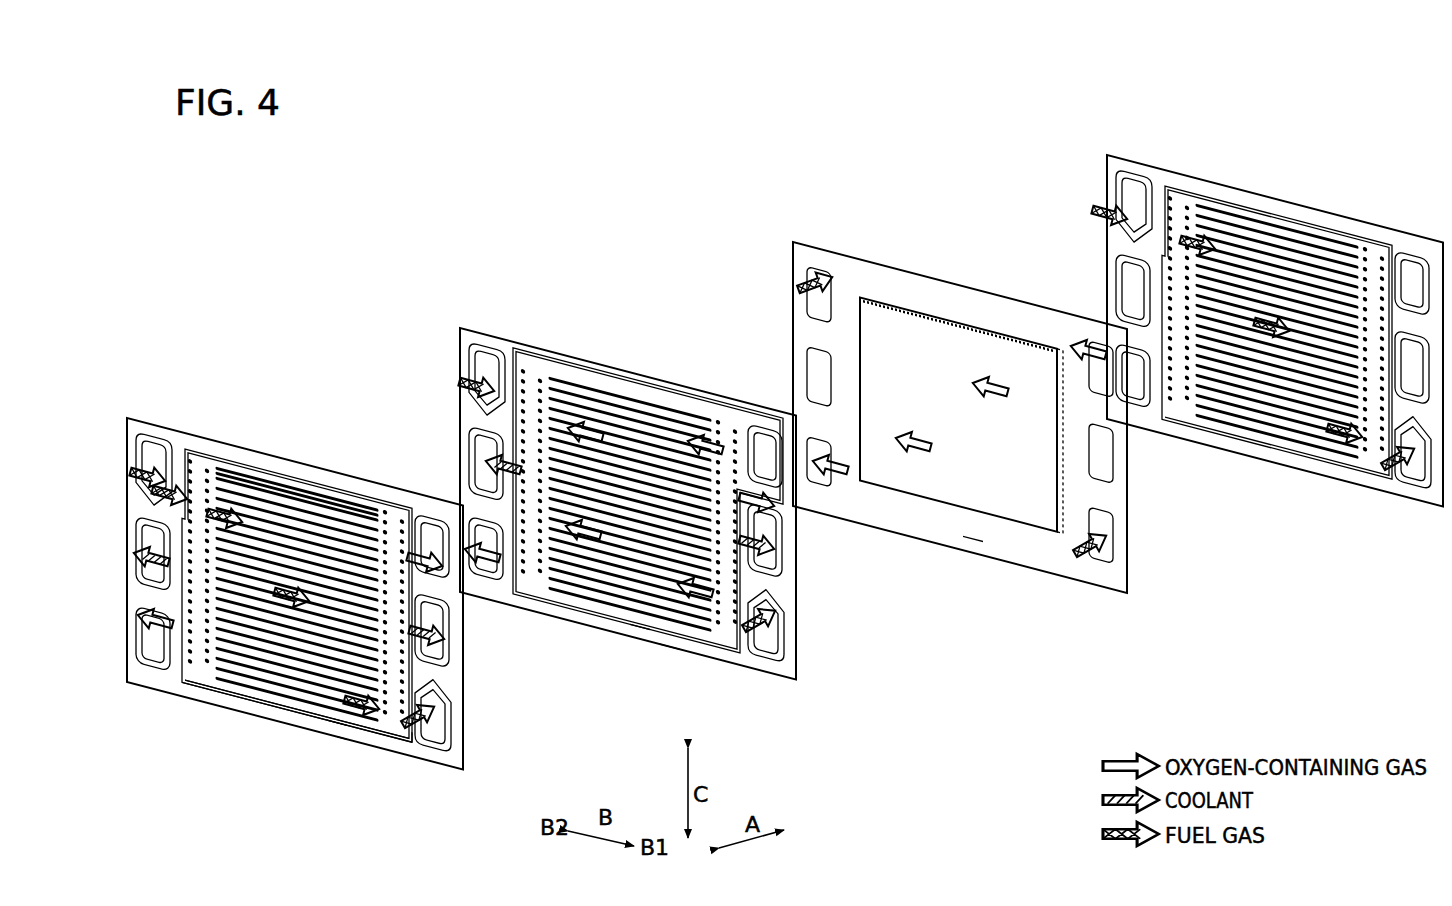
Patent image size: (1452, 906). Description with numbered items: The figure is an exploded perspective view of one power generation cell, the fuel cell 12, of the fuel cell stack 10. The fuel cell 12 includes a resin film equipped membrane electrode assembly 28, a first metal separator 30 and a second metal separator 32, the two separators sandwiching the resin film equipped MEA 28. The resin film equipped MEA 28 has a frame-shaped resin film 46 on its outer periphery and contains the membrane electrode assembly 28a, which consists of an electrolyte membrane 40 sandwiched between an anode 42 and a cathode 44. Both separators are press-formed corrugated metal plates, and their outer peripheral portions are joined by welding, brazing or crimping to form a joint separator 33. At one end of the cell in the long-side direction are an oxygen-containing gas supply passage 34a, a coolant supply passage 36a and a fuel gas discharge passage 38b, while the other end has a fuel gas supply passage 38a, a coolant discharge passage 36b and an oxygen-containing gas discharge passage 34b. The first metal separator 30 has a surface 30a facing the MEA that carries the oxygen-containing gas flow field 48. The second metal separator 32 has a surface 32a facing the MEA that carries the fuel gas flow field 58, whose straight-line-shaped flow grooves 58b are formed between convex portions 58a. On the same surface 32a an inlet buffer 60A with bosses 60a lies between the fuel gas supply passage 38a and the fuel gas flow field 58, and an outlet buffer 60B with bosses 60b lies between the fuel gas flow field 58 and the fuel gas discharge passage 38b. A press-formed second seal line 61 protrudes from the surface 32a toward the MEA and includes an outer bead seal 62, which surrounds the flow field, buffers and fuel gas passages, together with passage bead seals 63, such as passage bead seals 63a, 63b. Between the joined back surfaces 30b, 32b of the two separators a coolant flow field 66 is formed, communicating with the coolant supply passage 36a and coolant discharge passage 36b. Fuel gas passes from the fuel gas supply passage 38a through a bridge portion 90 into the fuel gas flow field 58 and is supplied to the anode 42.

The fuel cell stack 10 is at (493, 172).
The fuel cell 12 is at (787, 454).
The resin film equipped membrane electrode assembly 28 is at (1025, 572).
The membrane electrode assembly 28a is at (973, 538).
The first metal separator 30 is at (458, 325).
The surface of the first metal separator 30a is at (670, 646).
The back surface of the first metal separator 30b is at (640, 626).
The second metal separator 32 is at (130, 415).
The surface of the second metal separator 32a is at (337, 722).
The back surface of the second metal separator 32b is at (342, 738).
The joint separator 33 is at (455, 272).
The oxygen-containing gas supply passage 34a is at (432, 546).
The oxygen-containing gas discharge passage 34b is at (153, 638).
The coolant supply passage 36a is at (432, 630).
The coolant discharge passage 36b is at (153, 553).
The fuel gas supply passage 38a is at (154, 470).
The fuel gas discharge passage 38b is at (433, 713).
The electrolyte membrane 40 is at (961, 415).
The anode 42 is at (961, 415).
The cathode 44 is at (961, 415).
The frame-shaped resin film 46 is at (961, 415).
The oxygen-containing gas flow field 48 is at (630, 504).
The fuel gas flow field 58 is at (297, 594).
The convex portions 58a is at (297, 594).
The straight-line-shaped flow grooves 58b is at (297, 494).
The inlet buffer 60A is at (198, 568).
The bosses 60a is at (198, 568).
The outlet buffer 60B is at (393, 619).
The bosses 60b is at (393, 619).
The second seal line 61 is at (297, 712).
The outer bead seal 62 is at (297, 709).
The passage bead seals 63 is at (293, 592).
The fuel gas supply passage bead 63a is at (154, 470).
The fuel gas discharge passage bead 63b is at (433, 713).
The coolant flow field 66 is at (630, 504).
The bridge portion 90 is at (297, 595).